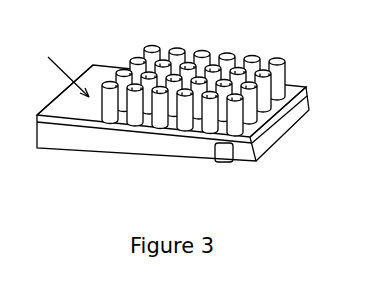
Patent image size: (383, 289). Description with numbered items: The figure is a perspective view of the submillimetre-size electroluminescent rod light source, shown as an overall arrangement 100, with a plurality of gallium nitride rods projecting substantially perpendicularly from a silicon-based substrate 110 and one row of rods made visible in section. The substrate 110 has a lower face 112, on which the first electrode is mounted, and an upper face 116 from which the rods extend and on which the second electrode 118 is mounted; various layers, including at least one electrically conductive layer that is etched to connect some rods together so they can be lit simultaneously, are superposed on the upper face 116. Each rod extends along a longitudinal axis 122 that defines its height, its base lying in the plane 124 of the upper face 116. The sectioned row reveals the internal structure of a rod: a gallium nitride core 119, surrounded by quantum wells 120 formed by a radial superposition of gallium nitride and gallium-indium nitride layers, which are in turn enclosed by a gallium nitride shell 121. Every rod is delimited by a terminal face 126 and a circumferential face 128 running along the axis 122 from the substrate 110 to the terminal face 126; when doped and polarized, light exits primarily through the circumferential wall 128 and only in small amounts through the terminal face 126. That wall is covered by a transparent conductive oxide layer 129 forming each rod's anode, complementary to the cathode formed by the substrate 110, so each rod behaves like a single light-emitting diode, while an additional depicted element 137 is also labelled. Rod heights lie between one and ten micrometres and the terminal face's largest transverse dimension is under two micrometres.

The device 100 is at (290, 70).
The substrate 110 is at (37, 148).
The lower face 112 is at (73, 153).
The upper face 116 is at (273, 137).
The second electrode 118 is at (92, 68).
The gallium nitride core 119 is at (232, 148).
The quantum wells 120 is at (212, 140).
The shell 121 is at (117, 127).
The longitudinal axis 122 is at (275, 56).
The plane 124 is at (312, 84).
The terminal face 126 is at (180, 50).
The circumferential face 128 is at (231, 55).
The transparent conductive oxide layer 129 is at (148, 130).
The pillar 137 is at (184, 135).